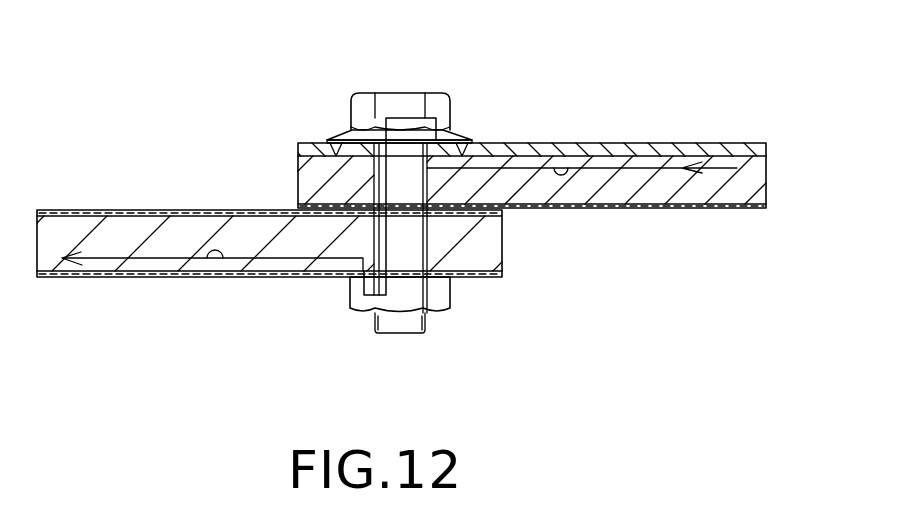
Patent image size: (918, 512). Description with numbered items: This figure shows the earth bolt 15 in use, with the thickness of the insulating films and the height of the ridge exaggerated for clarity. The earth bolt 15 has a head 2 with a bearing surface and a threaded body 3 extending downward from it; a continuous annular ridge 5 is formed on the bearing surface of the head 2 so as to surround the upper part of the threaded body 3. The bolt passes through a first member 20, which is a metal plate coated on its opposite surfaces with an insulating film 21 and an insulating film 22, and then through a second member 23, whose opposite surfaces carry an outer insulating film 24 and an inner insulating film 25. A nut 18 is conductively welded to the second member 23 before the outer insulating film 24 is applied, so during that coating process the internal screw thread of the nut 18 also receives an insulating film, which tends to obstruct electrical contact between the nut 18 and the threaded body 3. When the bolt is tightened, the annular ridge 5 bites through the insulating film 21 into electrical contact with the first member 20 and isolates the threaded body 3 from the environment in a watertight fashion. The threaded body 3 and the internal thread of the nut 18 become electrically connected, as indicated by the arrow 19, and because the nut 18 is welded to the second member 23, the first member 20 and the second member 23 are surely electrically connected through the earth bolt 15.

The head 2 is at (375, 195).
The threaded body 3 is at (406, 242).
The annular ridge 5 is at (334, 150).
The earth bolt 15 is at (393, 110).
The nut 18 is at (363, 300).
The arrow 19 is at (567, 168).
The first member 20 is at (298, 168).
The insulating film 21 is at (312, 141).
The insulating film 22 is at (493, 176).
The second member 23 is at (269, 244).
The outer insulating film 24 is at (119, 278).
The inner insulating film 25 is at (76, 211).